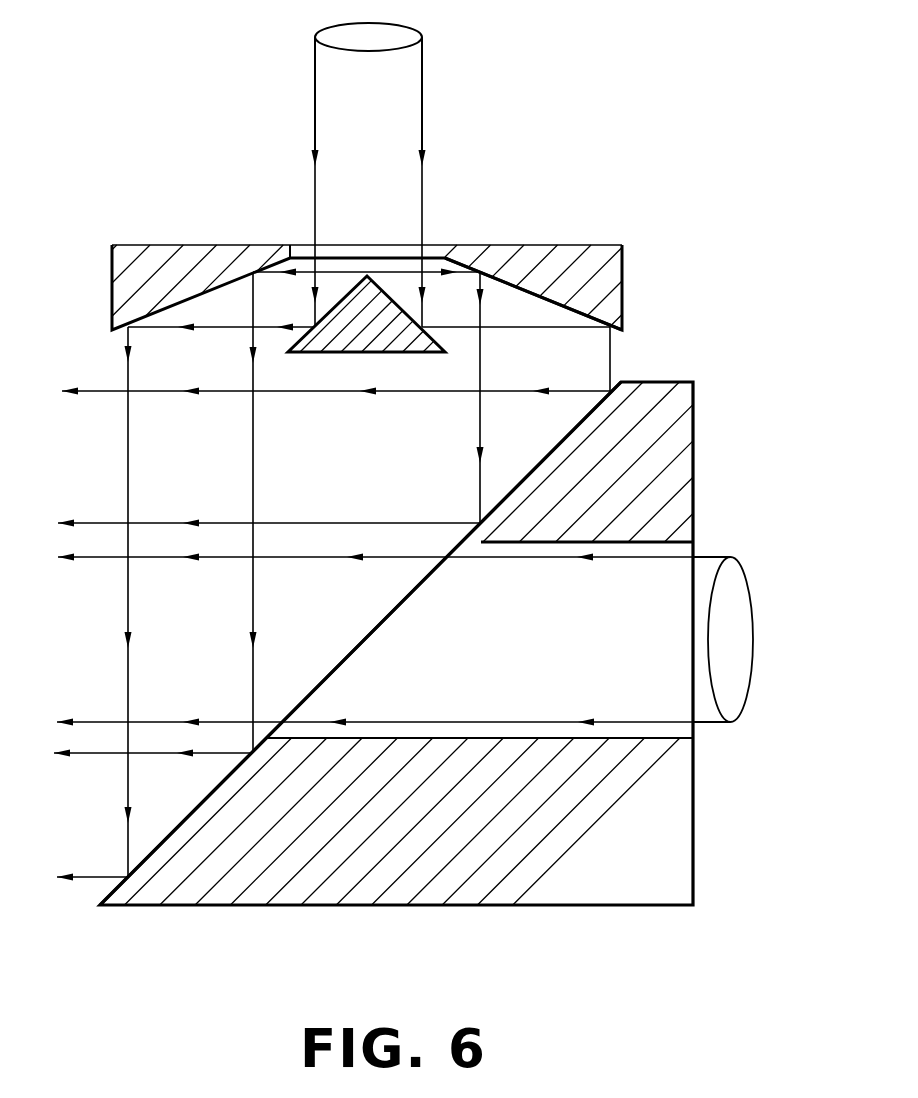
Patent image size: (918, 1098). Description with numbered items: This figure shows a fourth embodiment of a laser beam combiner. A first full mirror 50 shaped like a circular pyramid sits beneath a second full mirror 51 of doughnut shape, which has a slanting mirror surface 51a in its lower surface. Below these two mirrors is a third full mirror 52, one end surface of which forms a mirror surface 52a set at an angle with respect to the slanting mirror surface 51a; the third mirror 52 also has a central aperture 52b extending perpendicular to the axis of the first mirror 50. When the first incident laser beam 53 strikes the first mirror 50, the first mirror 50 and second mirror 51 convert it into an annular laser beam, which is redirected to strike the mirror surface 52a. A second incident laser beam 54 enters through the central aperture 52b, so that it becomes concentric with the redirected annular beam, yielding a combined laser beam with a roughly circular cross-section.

The first full mirror 50 is at (387, 354).
The second full mirror 51 is at (367, 250).
The slanting mirror surface 51a is at (503, 287).
The third full mirror 52 is at (396, 634).
The mirror surface 52a is at (190, 812).
The central aperture 52b is at (533, 740).
The first incident laser beam 53 is at (423, 90).
The second incident laser beam 54 is at (722, 724).